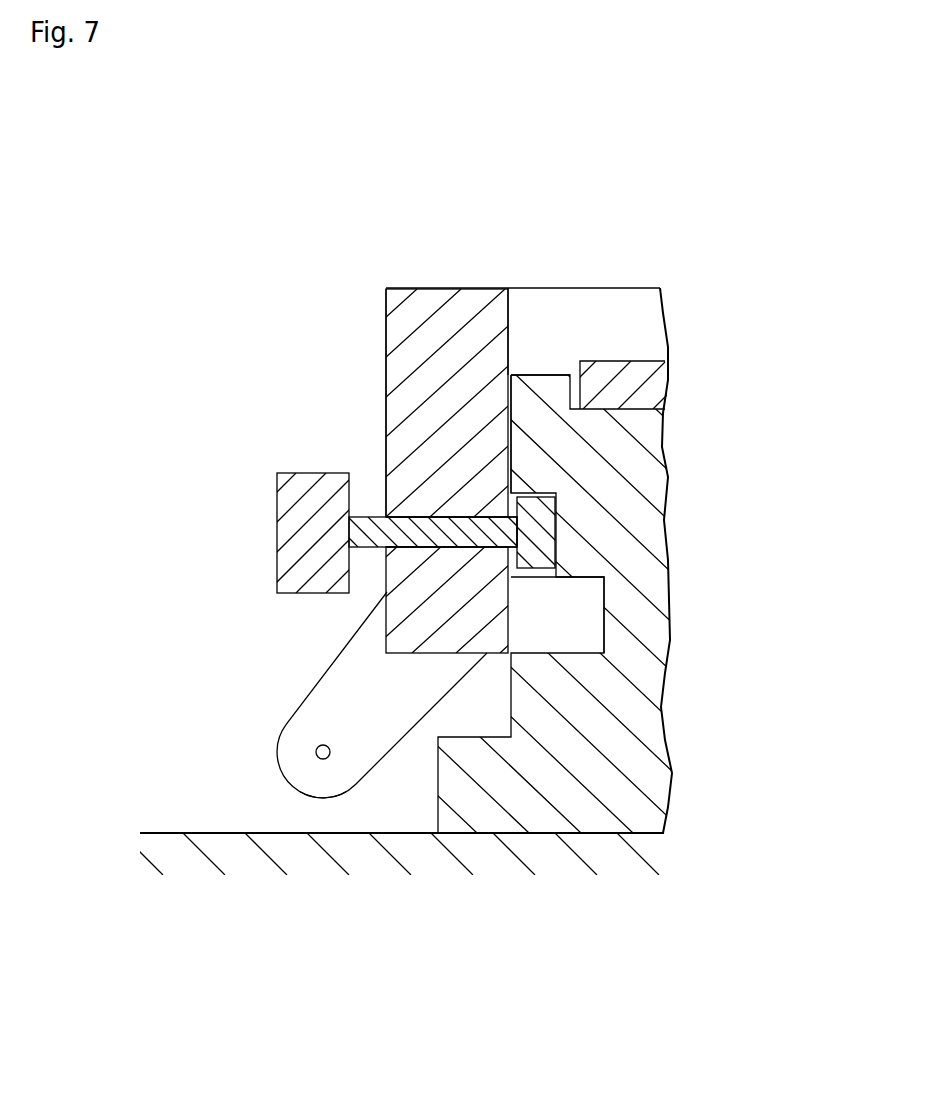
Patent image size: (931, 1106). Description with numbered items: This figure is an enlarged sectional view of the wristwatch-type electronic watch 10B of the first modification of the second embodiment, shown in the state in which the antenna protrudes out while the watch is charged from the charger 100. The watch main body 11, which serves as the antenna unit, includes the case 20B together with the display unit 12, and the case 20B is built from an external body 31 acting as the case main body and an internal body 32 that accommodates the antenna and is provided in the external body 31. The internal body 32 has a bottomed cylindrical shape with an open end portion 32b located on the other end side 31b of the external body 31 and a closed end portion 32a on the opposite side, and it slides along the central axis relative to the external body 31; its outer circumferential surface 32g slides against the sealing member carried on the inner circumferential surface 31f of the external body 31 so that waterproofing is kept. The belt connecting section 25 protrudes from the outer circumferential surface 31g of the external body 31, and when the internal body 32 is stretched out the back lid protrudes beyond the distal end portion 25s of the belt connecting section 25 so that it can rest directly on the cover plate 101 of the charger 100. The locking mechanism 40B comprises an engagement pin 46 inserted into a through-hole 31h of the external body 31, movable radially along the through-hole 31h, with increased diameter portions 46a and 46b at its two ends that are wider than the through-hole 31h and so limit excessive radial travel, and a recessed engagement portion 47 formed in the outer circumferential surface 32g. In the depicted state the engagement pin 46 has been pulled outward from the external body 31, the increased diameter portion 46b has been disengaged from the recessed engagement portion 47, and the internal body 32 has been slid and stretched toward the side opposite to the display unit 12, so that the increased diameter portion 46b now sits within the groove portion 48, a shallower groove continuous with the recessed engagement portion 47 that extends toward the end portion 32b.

The wristwatch-type electronic watch 10B is at (336, 234).
The watch main body 11 is at (404, 266).
The display unit 12 is at (643, 371).
The case 20B is at (371, 304).
The belt connecting section 25 is at (306, 708).
The distal end portion 25s is at (322, 798).
The external body 31 is at (386, 372).
The other end side 31b is at (437, 288).
The inner circumferential surface 31f is at (507, 331).
The outer circumferential surface 31g is at (386, 345).
The through-hole 31h is at (440, 532).
The internal body 32 is at (641, 481).
The end portion 32a is at (558, 833).
The end portion 32b is at (547, 373).
The outer circumferential surface 32g is at (508, 435).
The locking mechanism 40B is at (234, 502).
The engagement pin 46 is at (411, 558).
The increased diameter portion 46a is at (278, 568).
The increased diameter portion 46b is at (536, 573).
The recessed engagement portion 47 is at (603, 613).
The groove portion 48 is at (545, 530).
The charger 100 is at (178, 833).
The cover plate 101 is at (150, 833).